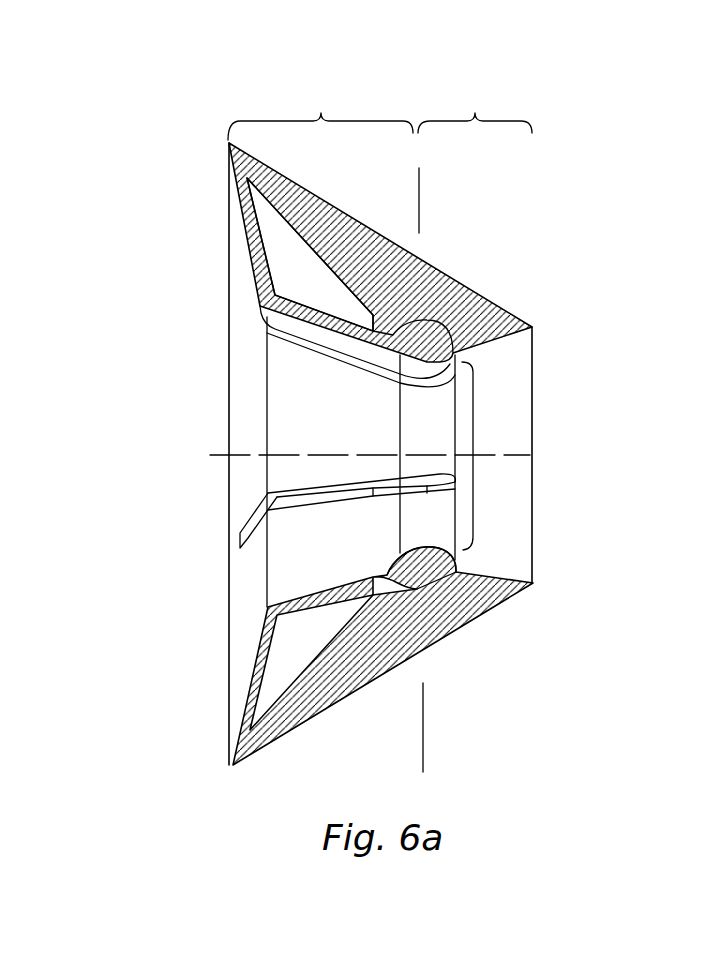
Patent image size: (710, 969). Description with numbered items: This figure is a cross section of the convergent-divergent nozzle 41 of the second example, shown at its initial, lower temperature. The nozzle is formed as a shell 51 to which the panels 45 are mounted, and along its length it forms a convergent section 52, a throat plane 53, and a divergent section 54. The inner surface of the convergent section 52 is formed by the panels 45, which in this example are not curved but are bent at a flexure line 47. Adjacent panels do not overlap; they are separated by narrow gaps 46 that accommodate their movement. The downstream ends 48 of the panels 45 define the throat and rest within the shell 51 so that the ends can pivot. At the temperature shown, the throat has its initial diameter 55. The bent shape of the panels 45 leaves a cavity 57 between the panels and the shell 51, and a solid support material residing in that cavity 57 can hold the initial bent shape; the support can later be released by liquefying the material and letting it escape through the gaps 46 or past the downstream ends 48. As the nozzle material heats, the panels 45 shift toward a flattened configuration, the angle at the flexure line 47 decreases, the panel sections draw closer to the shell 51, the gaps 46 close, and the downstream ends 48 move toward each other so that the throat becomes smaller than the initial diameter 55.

The convergent-divergent nozzle 41 is at (193, 118).
The panels 45 is at (265, 318).
The gaps 46 is at (290, 347).
The flexure line 47 is at (267, 435).
The downstream ends 48 is at (437, 385).
The shell 51 is at (433, 280).
The convergent section 52 is at (320, 110).
The throat plane 53 is at (419, 190).
The divergent section 54 is at (475, 107).
The initial diameter 55 is at (478, 425).
The cavity 57 is at (293, 253).